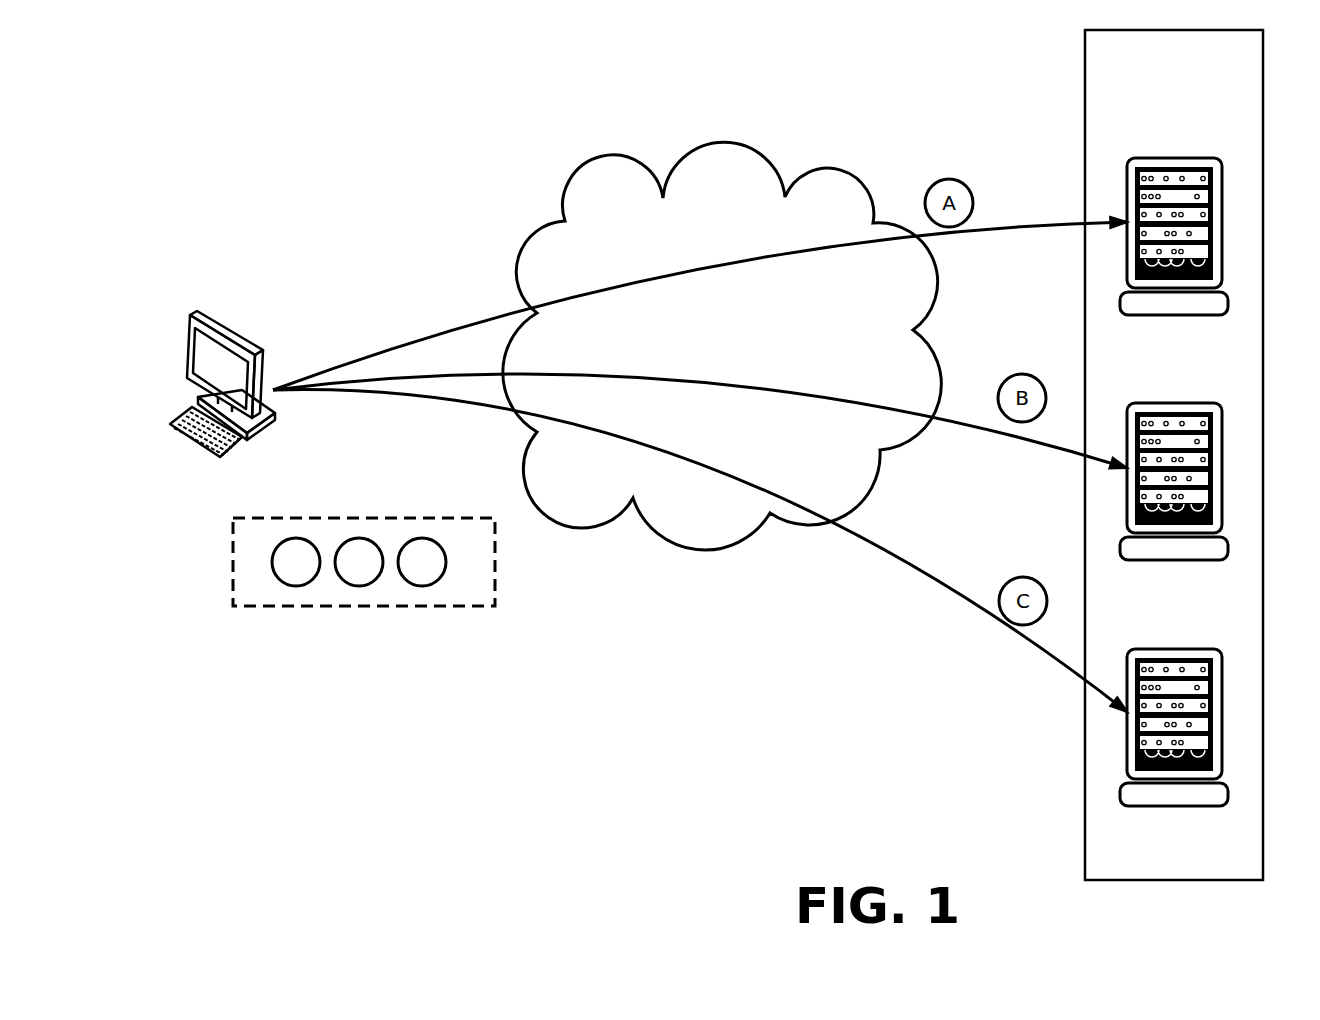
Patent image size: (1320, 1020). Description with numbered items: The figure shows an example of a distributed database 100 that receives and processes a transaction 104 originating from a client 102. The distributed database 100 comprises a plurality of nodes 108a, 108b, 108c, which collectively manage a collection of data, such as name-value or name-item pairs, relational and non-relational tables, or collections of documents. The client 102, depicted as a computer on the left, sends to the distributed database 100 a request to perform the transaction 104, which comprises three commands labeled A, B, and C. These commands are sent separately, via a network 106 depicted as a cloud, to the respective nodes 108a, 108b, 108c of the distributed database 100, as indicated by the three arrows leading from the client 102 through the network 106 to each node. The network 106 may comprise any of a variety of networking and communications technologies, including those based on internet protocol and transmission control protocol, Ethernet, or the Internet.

The distributed database 100 is at (1158, 102).
The client 102 is at (237, 337).
The transaction 104 is at (302, 606).
The network 106 is at (777, 356).
The node 108a is at (1153, 346).
The node 108b is at (1174, 498).
The node 108c is at (1174, 744).